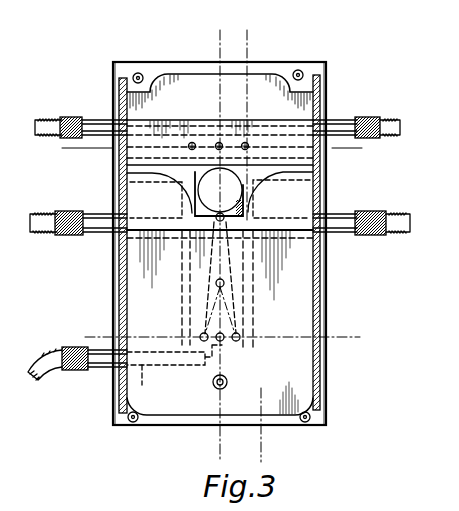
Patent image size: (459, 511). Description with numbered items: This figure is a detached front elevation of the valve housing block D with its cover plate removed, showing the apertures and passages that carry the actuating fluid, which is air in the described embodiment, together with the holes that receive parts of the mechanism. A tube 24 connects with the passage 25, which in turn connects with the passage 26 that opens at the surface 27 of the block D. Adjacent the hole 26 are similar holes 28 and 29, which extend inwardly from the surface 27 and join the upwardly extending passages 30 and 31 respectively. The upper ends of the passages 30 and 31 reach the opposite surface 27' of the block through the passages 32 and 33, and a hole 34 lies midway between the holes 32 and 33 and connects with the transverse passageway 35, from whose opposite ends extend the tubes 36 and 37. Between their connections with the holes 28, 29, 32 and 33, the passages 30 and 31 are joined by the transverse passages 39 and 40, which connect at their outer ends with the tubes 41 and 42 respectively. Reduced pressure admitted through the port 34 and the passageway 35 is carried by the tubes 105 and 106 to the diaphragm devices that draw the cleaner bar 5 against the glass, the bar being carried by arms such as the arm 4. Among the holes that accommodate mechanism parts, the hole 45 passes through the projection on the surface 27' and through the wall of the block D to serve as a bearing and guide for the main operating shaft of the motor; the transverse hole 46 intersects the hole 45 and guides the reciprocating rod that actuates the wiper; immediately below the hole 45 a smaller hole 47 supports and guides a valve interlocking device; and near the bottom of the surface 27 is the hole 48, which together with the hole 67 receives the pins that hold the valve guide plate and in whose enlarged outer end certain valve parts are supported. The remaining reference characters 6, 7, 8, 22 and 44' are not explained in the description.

The valve housing block D is at (262, 82).
The arm 4 is at (226, 47).
The cleaner bar 5 is at (247, 44).
The section line 6- 6 is at (97, 356).
The section line 7- 7 is at (83, 156).
The outlet elbow 8 is at (40, 380).
The hose nipple 22 is at (66, 233).
The tube 24 is at (100, 358).
The passage 25 is at (174, 368).
The passage 26 is at (218, 341).
The surface of valve housing block 27 is at (293, 343).
The surface of valve housing block 27' is at (116, 173).
The hole 28 is at (200, 336).
The hole 29 is at (240, 340).
The upwardly extending passage 30 is at (184, 299).
The upwardly extending passage 31 is at (262, 304).
The passage or port 32 is at (191, 141).
The passage or port 33 is at (247, 141).
The hole or port 34 is at (220, 141).
The transverse passageway 35 is at (153, 128).
The tube 36 is at (100, 118).
The tube 37 is at (344, 118).
The transverse passage 39 is at (145, 214).
The transverse passage 40 is at (276, 214).
The tube 41 is at (103, 222).
The tube 42 is at (344, 228).
The pivot pin 44' is at (235, 233).
The hole 45 is at (219, 192).
The transverse hole 46 is at (321, 190).
The hole 47 is at (219, 228).
The hole 48 is at (213, 385).
The hole 67 is at (216, 283).
The tube 105 is at (42, 119).
The tube 106 is at (386, 119).